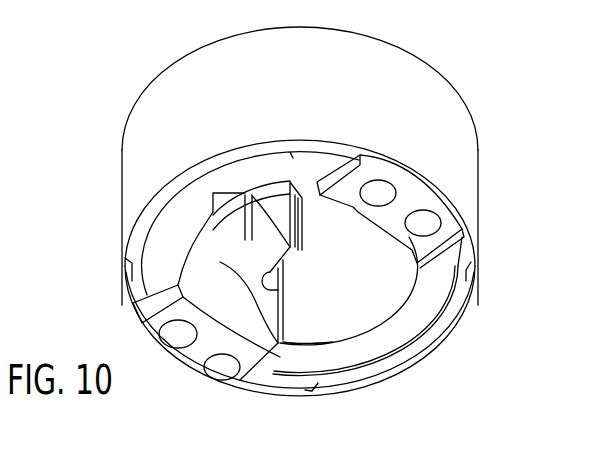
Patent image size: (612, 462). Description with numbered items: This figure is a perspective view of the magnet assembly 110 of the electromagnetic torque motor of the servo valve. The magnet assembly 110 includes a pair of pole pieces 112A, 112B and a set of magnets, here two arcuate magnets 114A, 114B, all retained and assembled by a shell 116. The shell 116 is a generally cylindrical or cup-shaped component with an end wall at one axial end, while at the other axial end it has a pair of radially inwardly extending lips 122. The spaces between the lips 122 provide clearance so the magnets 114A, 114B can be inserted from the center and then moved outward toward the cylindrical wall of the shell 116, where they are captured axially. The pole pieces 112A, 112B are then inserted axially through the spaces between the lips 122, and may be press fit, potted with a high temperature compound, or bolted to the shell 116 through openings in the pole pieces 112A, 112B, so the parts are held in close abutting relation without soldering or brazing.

The magnet assembly 110 is at (486, 69).
The shell 116 is at (465, 167).
The lips 122 is at (141, 232).
The arcuate magnet 114A is at (197, 200).
The arcuate magnet 114B is at (408, 328).
The pole piece 112A is at (190, 358).
The pole piece 112B is at (420, 248).